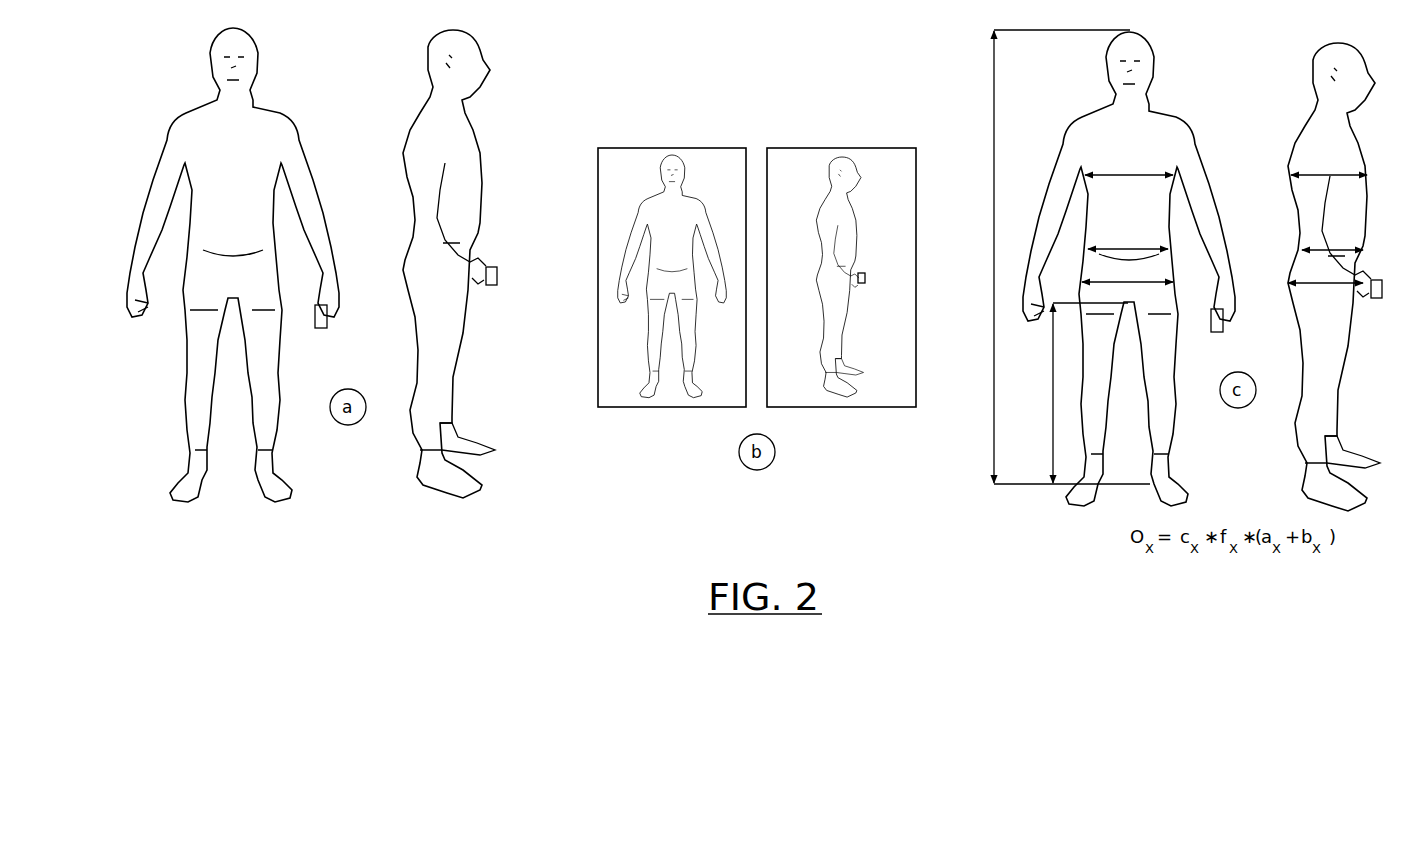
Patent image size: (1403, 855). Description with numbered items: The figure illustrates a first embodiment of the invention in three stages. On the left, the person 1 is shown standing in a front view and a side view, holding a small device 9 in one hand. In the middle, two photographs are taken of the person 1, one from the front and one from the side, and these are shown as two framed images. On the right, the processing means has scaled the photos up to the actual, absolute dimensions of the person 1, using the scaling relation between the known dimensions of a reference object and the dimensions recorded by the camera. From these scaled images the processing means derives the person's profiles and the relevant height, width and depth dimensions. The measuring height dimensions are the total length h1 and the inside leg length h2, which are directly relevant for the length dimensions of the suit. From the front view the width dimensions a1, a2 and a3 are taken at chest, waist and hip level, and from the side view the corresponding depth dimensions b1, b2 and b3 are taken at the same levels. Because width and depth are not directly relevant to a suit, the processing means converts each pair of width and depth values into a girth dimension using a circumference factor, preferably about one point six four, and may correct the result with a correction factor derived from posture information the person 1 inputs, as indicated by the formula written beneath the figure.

The person 1 is at (413, 133).
The mobile device 9 is at (327, 320).
The total length h1 is at (1061, 257).
The inside leg length h2 is at (1077, 393).
The width dimension at chest level a1 is at (1129, 163).
The width dimension at waist level a2 is at (1128, 238).
The width dimension at hip level a3 is at (1127, 270).
The depth dimension at chest level b1 is at (1329, 162).
The depth dimension at waist level b2 is at (1332, 238).
The depth dimension at hip level b3 is at (1325, 270).